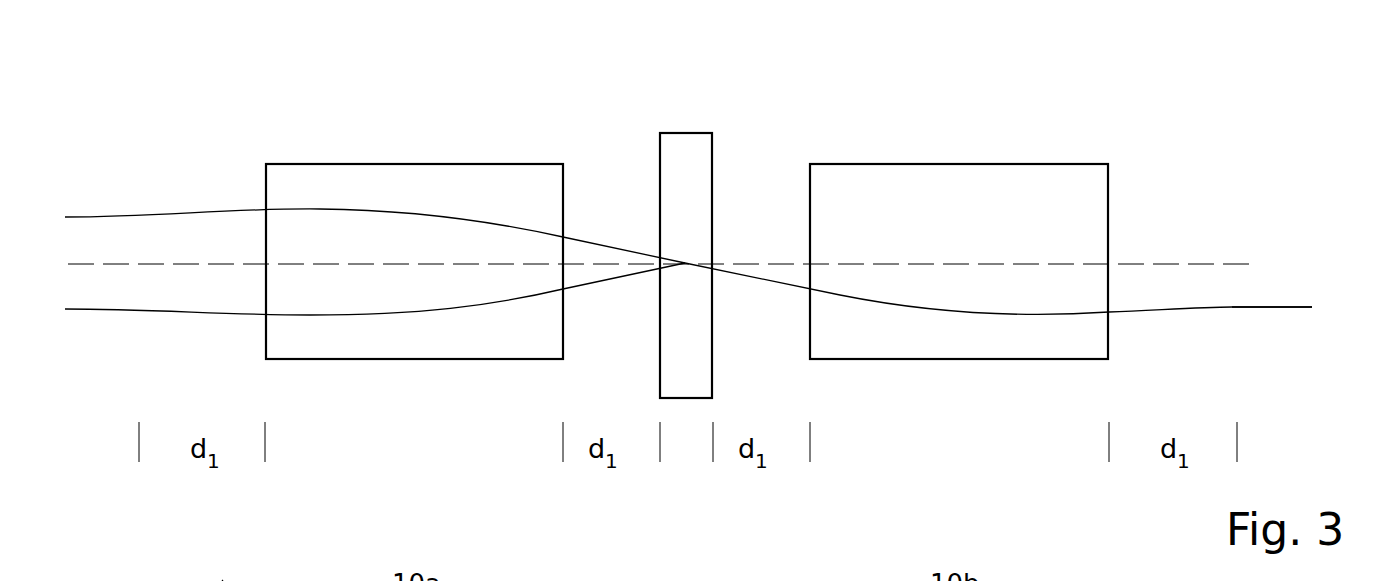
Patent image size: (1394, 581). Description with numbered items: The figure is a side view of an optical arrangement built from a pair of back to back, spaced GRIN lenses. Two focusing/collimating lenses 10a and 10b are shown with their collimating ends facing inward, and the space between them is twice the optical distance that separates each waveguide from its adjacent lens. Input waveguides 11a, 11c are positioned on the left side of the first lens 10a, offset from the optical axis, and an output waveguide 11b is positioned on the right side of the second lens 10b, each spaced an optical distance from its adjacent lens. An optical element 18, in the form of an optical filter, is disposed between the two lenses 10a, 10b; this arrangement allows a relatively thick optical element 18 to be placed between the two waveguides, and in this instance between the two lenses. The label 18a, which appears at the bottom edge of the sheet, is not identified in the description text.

The focusing/collimating lens 10a is at (397, 180).
The focusing/collimating lens 10b is at (1007, 187).
The optical element 18 is at (684, 149).
The aperture plate 18a is at (222, 580).
The input waveguide 11a is at (100, 217).
The output waveguide 11b is at (1265, 307).
The input waveguide 11c is at (82, 309).